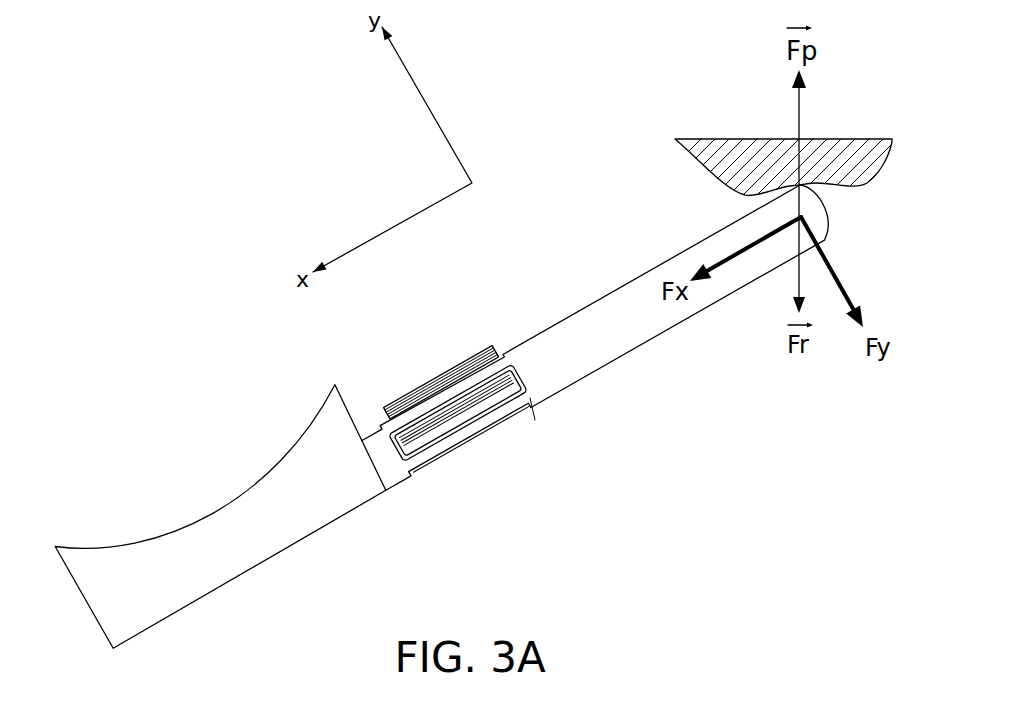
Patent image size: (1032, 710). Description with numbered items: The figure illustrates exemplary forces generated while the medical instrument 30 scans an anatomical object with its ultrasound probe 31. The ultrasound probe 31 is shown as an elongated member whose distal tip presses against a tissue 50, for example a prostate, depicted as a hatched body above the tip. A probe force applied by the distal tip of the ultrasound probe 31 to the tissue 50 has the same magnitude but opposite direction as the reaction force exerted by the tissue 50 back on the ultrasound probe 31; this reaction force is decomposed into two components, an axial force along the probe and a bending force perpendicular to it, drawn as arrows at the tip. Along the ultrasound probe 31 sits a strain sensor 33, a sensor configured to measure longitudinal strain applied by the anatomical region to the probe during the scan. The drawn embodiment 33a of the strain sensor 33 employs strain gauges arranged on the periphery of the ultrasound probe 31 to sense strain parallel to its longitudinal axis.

The medical instrument 30 is at (208, 373).
The ultrasound probe 31 is at (633, 350).
The strain sensor 33 is at (212, 517).
The strain sensor embodiment 33a is at (437, 350).
The tissue 50 is at (678, 141).